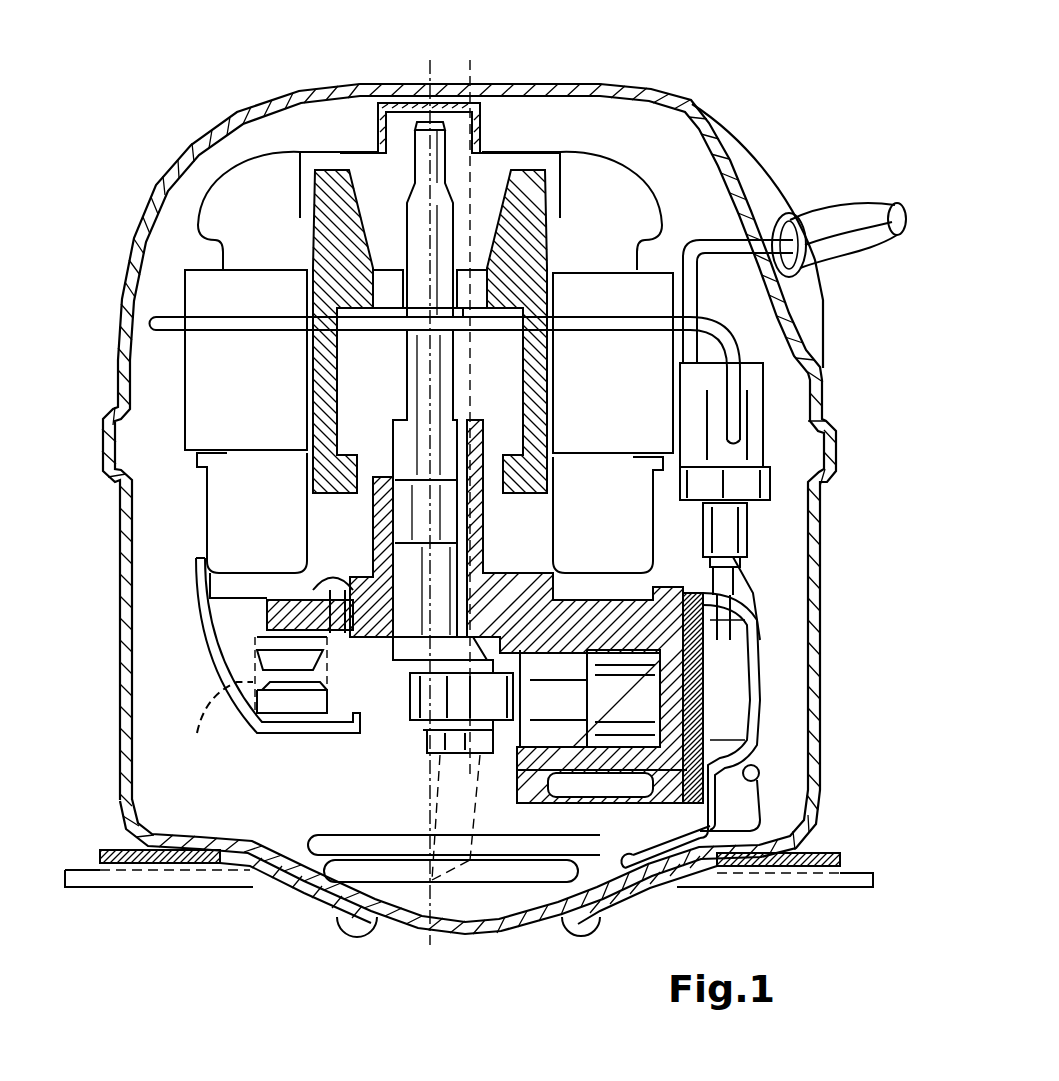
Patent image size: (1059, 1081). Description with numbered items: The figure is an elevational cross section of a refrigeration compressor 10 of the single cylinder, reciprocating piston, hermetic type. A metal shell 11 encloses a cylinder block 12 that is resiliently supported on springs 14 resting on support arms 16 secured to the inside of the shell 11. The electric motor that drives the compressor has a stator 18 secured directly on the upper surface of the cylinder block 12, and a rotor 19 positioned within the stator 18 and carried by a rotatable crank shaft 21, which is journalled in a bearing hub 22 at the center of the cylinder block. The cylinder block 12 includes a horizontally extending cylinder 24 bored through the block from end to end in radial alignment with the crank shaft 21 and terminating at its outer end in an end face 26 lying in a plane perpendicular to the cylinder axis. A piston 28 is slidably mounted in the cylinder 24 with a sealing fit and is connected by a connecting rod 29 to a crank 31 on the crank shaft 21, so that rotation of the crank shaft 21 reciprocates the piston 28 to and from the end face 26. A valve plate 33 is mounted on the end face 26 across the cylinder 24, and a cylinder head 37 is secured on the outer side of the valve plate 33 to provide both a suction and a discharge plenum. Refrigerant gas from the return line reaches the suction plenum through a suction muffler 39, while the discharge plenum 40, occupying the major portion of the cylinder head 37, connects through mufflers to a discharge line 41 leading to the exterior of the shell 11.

The refrigeration compressor 10 is at (688, 104).
The metal shell 11 is at (138, 247).
The cylinder block 12 is at (530, 768).
The springs 14 is at (217, 720).
The support arms 16 is at (203, 660).
The stator 18 is at (246, 397).
The rotor 19 is at (531, 172).
The crank shaft 21 is at (416, 216).
The bearing hub 22 is at (380, 522).
The cylinder 24 is at (553, 773).
The end face 26 is at (688, 597).
The piston 28 is at (607, 683).
The connecting rod 29 is at (423, 723).
The crank 31 is at (440, 756).
The valve plate 33 is at (720, 801).
The cylinder head 37 is at (758, 680).
The suction muffler 39 is at (757, 392).
The discharge plenum 40 is at (733, 697).
The discharge line 41 is at (143, 318).